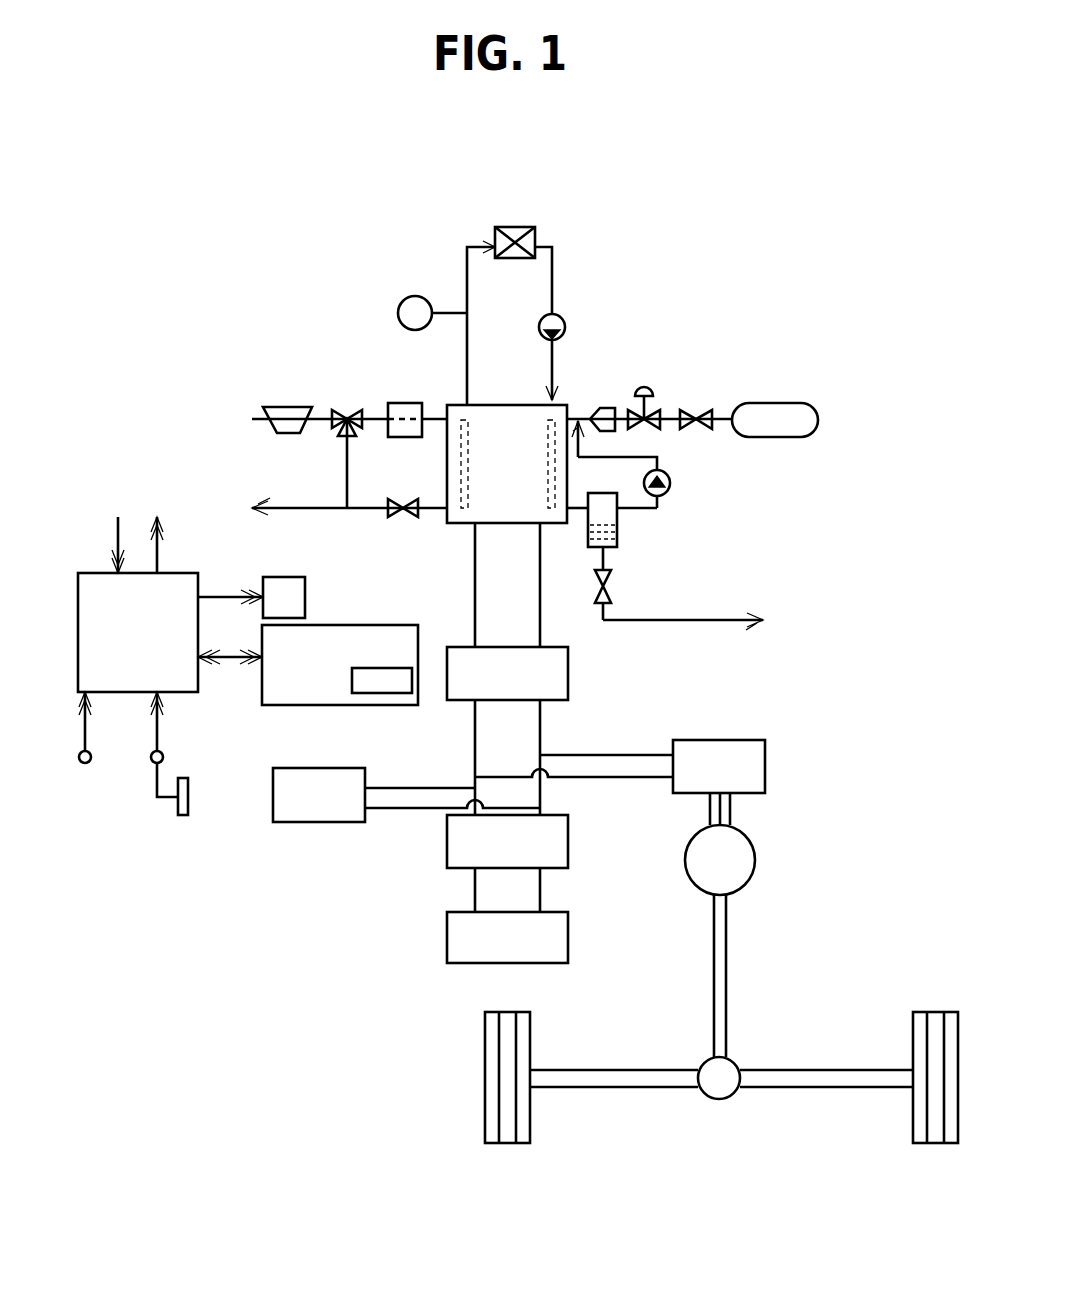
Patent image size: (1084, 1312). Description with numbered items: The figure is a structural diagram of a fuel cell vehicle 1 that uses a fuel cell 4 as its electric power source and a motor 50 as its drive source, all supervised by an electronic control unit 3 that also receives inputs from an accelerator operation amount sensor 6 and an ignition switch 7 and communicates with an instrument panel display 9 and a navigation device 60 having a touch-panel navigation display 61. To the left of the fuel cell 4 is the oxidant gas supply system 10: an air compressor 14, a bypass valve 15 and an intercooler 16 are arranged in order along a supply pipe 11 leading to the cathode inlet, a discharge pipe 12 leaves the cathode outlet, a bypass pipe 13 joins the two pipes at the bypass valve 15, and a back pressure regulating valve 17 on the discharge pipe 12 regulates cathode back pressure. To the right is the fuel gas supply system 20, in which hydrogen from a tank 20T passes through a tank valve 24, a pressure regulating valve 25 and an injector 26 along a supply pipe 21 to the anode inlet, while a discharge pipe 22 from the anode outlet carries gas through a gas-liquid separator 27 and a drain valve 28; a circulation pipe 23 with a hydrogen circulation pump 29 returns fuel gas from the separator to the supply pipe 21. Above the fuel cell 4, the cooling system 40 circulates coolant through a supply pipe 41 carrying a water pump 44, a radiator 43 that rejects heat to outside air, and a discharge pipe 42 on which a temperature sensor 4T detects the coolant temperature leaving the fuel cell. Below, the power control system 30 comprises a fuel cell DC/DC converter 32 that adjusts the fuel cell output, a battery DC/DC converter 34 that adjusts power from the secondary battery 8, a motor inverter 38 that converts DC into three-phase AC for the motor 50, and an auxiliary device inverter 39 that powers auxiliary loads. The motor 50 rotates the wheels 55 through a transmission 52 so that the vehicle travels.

The fuel cell vehicle 1 is at (721, 231).
The electronic control unit 3 is at (78, 592).
The fuel cell 4 is at (503, 524).
The temperature sensor 4T is at (398, 313).
The accelerator operation amount sensor 6 is at (163, 757).
The ignition switch 7 is at (91, 757).
The secondary battery 8 is at (447, 940).
The instrument panel display 9 is at (305, 598).
The oxidant gas supply system 10 is at (338, 391).
The supply pipe 11 is at (432, 421).
The discharge pipe 12 is at (360, 509).
The bypass pipe 13 is at (347, 483).
The air compressor 14 is at (265, 407).
The bypass valve 15 is at (340, 426).
The intercooler 16 is at (410, 403).
The back pressure regulating valve 17 is at (403, 499).
The fuel gas supply system 20 is at (676, 338).
The tank 20T is at (762, 403).
The supply pipe 21 is at (668, 421).
The discharge pipe 22 is at (727, 620).
The circulation pipe 23 is at (636, 510).
The tank valve 24 is at (700, 410).
The pressure regulating valve 25 is at (643, 384).
The injector 26 is at (600, 408).
The gas-liquid separator 27 is at (586, 521).
The drain valve 28 is at (612, 589).
The hydrogen circulation pump 29 is at (666, 494).
The power control system 30 is at (320, 884).
The fuel cell DC/DC converter 32 is at (568, 672).
The battery DC/DC converter 34 is at (447, 842).
The motor inverter 38 is at (740, 741).
The auxiliary device inverter 39 is at (300, 768).
The cooling system 40 is at (576, 222).
The supply pipe 41 is at (552, 274).
The discharge pipe 42 is at (467, 282).
The radiator 43 is at (505, 227).
The water pump 44 is at (566, 327).
The motor 50 is at (752, 873).
The transmission 52 is at (727, 1085).
The wheels 55 is at (485, 1107).
The navigation device 60 is at (375, 625).
The touch-panel navigation display 61 is at (378, 694).